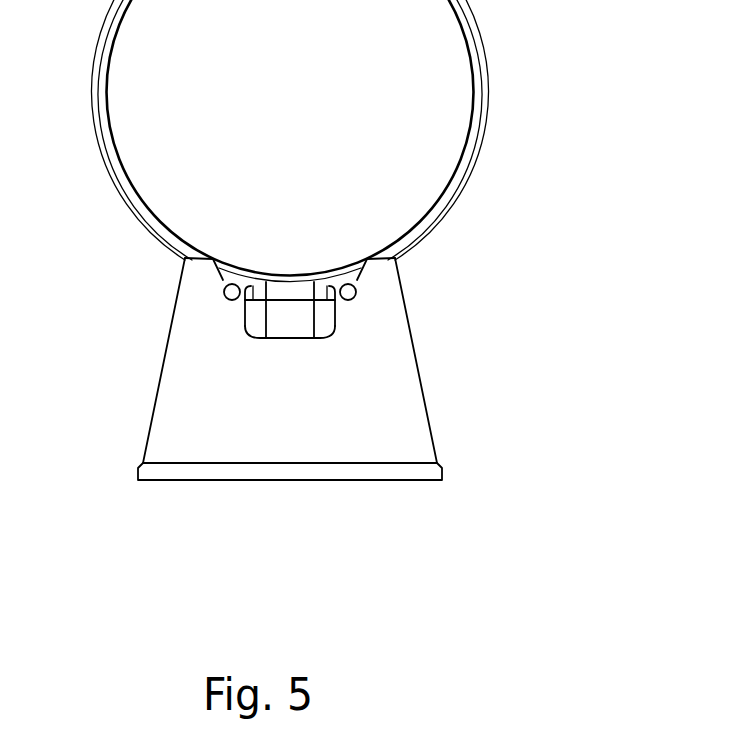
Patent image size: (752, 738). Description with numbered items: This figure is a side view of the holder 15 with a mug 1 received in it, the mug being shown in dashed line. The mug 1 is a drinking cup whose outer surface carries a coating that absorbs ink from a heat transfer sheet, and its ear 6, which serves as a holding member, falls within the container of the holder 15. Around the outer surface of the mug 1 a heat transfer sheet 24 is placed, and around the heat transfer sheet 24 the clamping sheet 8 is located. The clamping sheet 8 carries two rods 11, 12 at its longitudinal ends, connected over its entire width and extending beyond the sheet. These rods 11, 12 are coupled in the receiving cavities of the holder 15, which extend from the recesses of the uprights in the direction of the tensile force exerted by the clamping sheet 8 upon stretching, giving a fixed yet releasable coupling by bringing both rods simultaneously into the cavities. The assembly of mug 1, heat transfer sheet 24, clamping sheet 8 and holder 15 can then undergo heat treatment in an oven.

The mug 1 is at (135, 195).
The heat transfer sheet 24 is at (477, 142).
The clamping sheet 8 is at (467, 188).
The rod 12 is at (350, 294).
The rod 11 is at (228, 294).
The holder 15 is at (420, 377).
The ear 6 is at (285, 323).